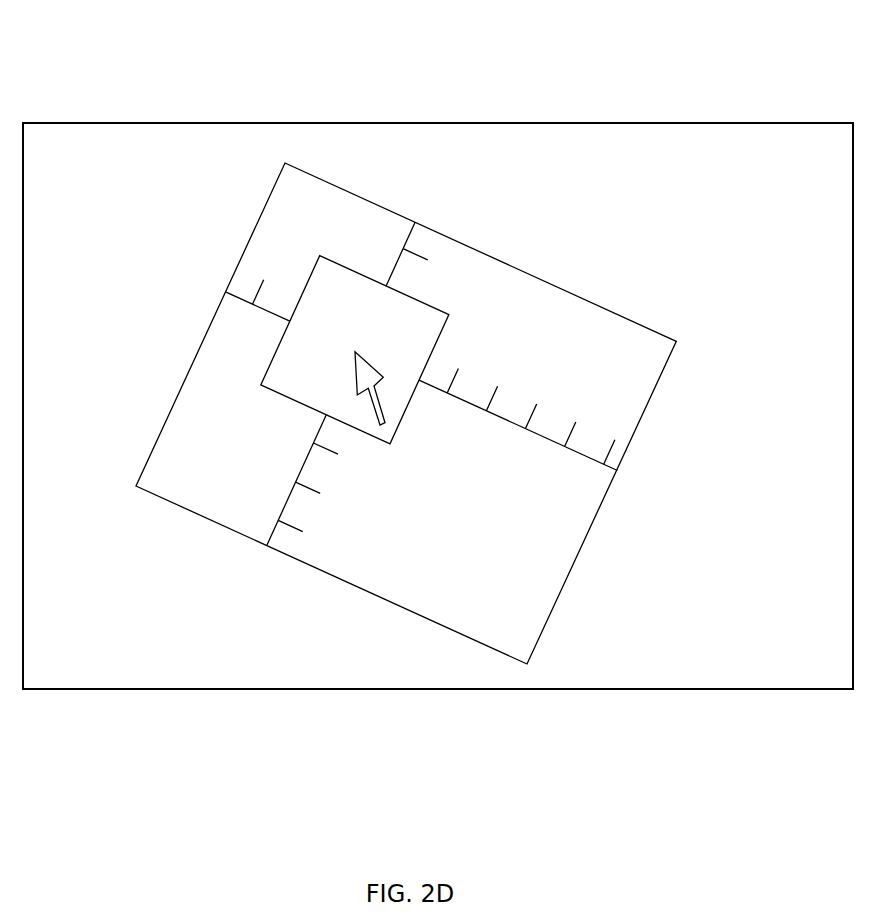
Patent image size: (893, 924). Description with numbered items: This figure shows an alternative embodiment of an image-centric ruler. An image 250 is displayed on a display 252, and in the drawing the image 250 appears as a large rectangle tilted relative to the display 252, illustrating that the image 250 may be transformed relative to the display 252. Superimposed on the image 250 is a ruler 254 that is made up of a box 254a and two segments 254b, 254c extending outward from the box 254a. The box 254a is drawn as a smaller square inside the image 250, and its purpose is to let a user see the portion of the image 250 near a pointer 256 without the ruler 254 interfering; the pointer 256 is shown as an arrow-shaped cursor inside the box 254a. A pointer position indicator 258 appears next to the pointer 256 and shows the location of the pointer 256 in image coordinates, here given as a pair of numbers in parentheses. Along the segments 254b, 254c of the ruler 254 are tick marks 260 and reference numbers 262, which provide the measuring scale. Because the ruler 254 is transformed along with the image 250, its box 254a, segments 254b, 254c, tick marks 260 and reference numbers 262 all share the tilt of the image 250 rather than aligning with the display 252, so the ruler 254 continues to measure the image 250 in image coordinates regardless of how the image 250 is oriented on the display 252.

The image 250 is at (536, 236).
The display 252 is at (222, 80).
The ruler 254 is at (347, 240).
The box 254a is at (404, 426).
The segment 254b is at (528, 394).
The segment 254c is at (286, 494).
The pointer 256 is at (381, 378).
The pointer position indicator 258 is at (322, 338).
The tick marks 260 is at (577, 424).
The reference numbers 262 is at (512, 350).